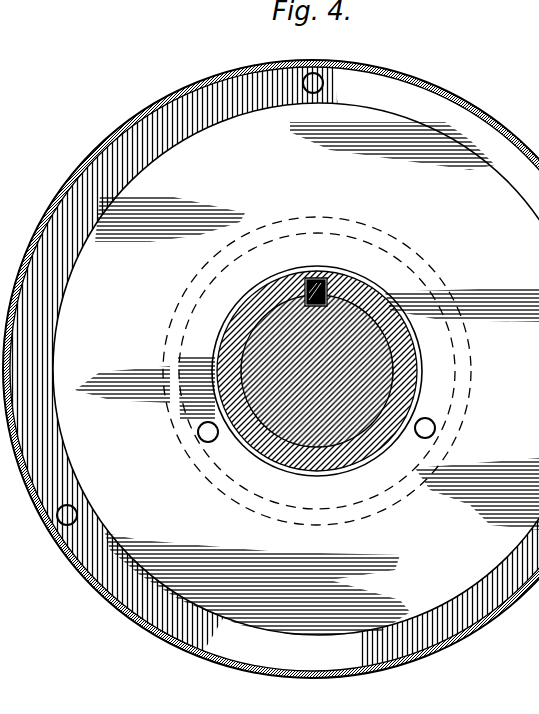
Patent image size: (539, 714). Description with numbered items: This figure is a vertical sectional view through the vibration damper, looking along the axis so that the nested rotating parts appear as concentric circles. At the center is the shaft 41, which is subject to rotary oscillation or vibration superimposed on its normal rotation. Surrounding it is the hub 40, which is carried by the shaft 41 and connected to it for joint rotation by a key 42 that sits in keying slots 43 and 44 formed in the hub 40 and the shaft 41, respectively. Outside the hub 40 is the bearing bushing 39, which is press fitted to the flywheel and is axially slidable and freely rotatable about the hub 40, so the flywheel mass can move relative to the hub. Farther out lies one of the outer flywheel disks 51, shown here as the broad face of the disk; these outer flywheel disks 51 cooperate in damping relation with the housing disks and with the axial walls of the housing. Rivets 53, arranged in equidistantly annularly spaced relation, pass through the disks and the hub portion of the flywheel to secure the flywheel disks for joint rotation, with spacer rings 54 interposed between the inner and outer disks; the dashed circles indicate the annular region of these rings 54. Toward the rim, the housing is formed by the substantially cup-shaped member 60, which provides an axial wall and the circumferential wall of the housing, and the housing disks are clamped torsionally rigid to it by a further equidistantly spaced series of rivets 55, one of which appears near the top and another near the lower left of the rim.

The bearing bushing 39 is at (425, 293).
The hub 40 is at (407, 378).
The shaft 41 is at (311, 417).
The key 42 is at (326, 283).
The keying slot 43 is at (330, 300).
The keying slot 44 is at (330, 307).
The outer flywheel disks 51 is at (437, 176).
The rivets 53 is at (198, 434).
The rings 54 is at (288, 231).
The rivets 55 is at (313, 94).
The cup-shaped member 60 is at (147, 628).